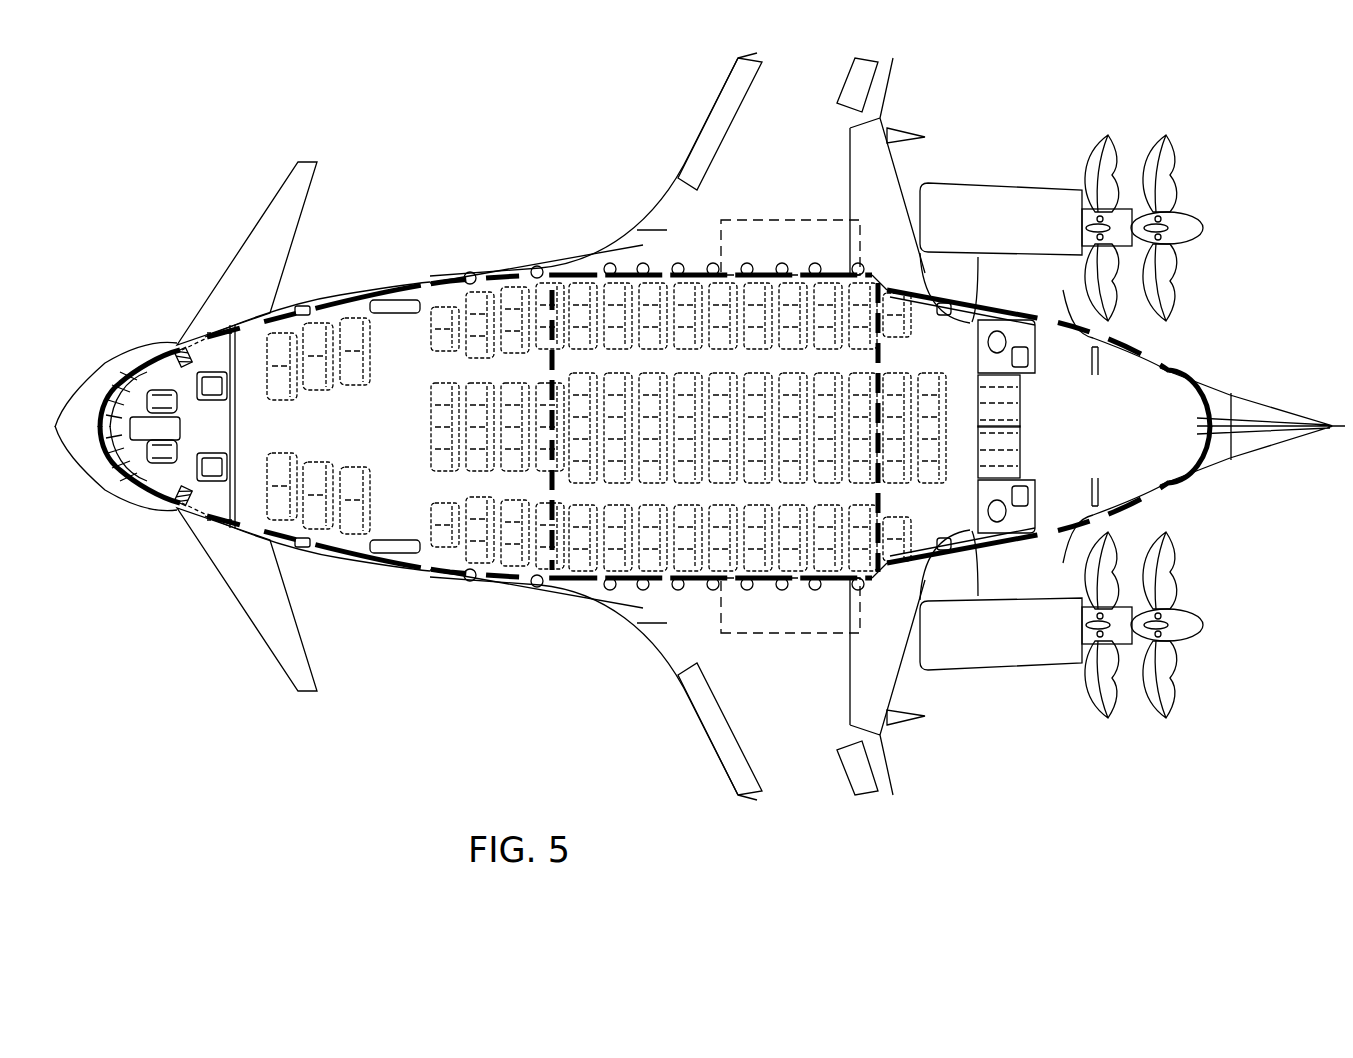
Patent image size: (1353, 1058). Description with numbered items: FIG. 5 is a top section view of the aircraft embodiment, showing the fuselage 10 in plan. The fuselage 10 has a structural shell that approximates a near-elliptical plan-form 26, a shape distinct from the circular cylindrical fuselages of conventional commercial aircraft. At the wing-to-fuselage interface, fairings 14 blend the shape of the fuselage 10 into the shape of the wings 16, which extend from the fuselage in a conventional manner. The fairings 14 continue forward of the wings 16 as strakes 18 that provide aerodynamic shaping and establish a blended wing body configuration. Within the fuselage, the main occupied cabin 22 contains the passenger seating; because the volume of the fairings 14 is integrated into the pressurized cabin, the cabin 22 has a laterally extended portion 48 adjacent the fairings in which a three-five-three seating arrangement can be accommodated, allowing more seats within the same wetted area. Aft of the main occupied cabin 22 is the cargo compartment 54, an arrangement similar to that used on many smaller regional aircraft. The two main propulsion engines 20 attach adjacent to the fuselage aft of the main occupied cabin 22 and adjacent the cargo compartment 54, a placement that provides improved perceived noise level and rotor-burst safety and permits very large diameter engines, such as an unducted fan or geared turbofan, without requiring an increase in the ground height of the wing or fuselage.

The fuselage 10 is at (432, 284).
The fairings 14 is at (727, 643).
The wings 16 is at (818, 720).
The strakes 18 is at (593, 603).
The main propulsion engines 20 is at (987, 628).
The main occupied cabin 22 is at (520, 435).
The near-elliptical plan-form 26 is at (354, 550).
The laterally extended portion 48 is at (728, 425).
The cargo compartment 54 is at (1102, 422).